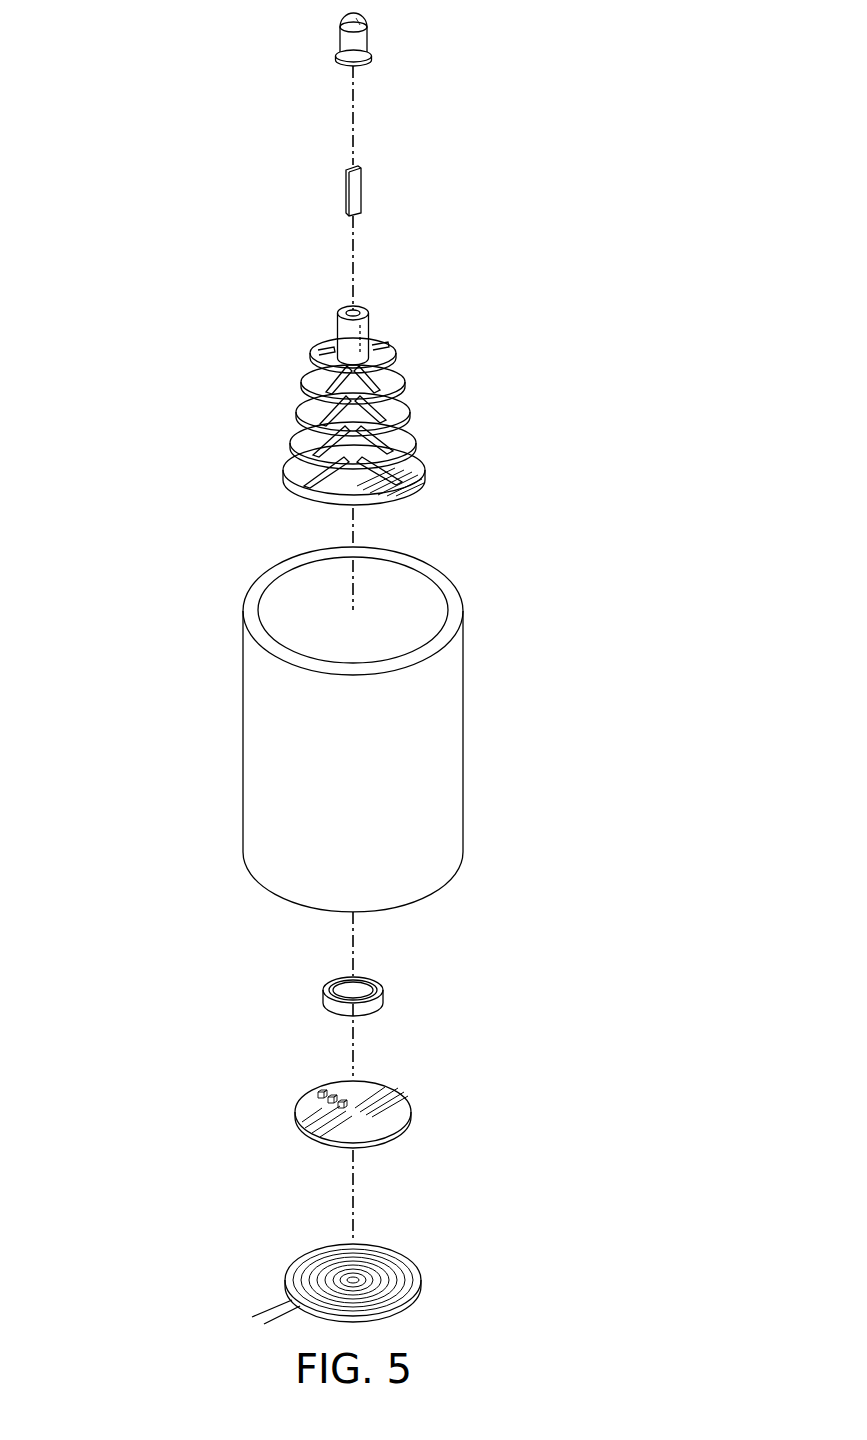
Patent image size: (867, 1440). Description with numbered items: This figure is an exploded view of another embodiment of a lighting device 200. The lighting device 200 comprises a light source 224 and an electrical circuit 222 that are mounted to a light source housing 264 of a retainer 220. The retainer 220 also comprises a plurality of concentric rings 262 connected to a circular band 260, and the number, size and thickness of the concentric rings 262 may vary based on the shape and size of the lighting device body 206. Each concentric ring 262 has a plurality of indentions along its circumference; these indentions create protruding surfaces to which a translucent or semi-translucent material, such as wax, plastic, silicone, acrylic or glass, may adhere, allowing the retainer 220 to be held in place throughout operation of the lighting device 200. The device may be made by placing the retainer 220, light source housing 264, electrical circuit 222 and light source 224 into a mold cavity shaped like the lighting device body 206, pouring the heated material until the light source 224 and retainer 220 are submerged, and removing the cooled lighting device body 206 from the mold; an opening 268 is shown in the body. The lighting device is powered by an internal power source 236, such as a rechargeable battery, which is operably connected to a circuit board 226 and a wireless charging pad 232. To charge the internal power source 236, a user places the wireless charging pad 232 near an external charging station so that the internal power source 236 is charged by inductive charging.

The lighting device 200 is at (112, 252).
The light source 224 is at (373, 47).
The electrical circuit 222 is at (346, 190).
The light source housing 264 is at (360, 306).
The retainer 220 is at (349, 405).
The concentric rings 262 is at (292, 437).
The circular band 260 is at (312, 498).
The inner opening 268 is at (438, 600).
The lighting device body 206 is at (392, 721).
The internal power source 236 is at (385, 995).
The circuit board 226 is at (295, 1118).
The wireless charging pad 232 is at (422, 1283).